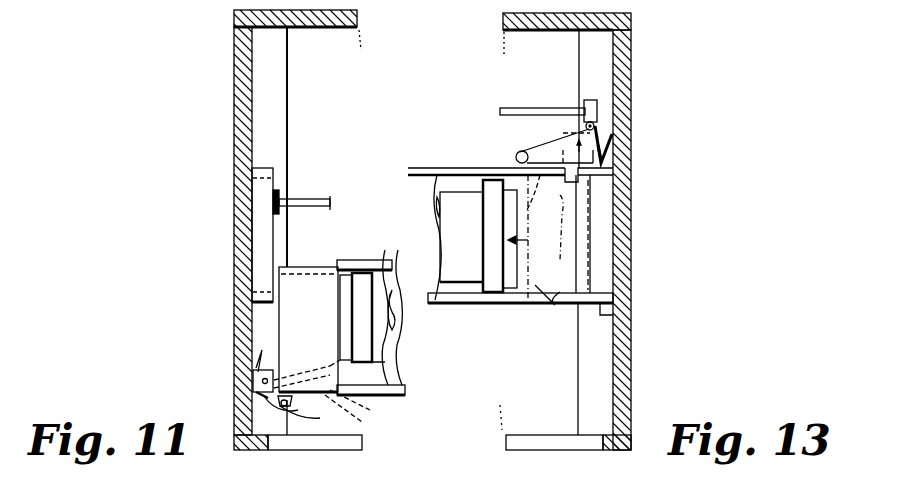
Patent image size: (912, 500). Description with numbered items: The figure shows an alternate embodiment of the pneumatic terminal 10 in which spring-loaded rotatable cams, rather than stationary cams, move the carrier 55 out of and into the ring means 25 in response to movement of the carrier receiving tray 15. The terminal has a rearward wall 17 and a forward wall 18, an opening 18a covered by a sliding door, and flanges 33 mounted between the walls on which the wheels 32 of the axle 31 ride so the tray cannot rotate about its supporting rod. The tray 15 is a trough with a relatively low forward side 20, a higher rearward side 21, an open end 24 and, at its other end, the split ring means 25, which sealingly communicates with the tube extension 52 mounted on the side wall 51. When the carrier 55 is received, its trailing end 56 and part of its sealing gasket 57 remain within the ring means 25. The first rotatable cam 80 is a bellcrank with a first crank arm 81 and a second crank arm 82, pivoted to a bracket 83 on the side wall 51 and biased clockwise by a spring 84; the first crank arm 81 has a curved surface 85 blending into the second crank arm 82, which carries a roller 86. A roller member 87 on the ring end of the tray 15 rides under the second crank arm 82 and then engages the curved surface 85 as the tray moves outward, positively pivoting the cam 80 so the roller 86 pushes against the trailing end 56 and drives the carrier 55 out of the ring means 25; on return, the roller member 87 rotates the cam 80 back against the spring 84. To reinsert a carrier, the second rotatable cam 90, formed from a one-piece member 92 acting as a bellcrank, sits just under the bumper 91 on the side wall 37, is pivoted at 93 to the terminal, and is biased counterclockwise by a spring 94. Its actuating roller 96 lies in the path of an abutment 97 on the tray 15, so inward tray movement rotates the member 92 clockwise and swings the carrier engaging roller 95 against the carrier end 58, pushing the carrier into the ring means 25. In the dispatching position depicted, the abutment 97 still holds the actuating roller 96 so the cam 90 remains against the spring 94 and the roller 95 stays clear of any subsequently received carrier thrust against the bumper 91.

In FIG. 11, the pneumatic terminal 10 is at (226, 150).
In FIG. 13, the pneumatic terminal 10 is at (652, 146).
In FIG. 11, the carrier receiving tray 15 is at (410, 395).
In FIG. 13, the carrier receiving tray 15 is at (478, 308).
In FIG. 11, the rearward wall 17 is at (246, 19).
In FIG. 13, the rearward wall 17 is at (628, 22).
In FIG. 11, the forward wall 18 is at (243, 445).
In FIG. 13, the forward wall 18 is at (620, 452).
In FIG. 11, the opening 18a is at (336, 450).
In FIG. 13, the opening 18a is at (548, 445).
In FIG. 11, the forward side 20 is at (405, 390).
In FIG. 13, the forward side 20 is at (436, 305).
In FIG. 11, the rearward side 21 is at (380, 262).
In FIG. 13, the rearward side 21 is at (428, 165).
In FIG. 13, the open end 24 is at (605, 262).
In FIG. 11, the ring means 25 is at (312, 265).
In FIG. 11, the axle 31 is at (307, 198).
In FIG. 13, the axle 31 is at (500, 112).
In FIG. 11, the wheels 32 is at (280, 200).
In FIG. 13, the wheels 32 is at (589, 100).
In FIG. 11, the flanges 33 is at (286, 150).
In FIG. 13, the flanges 33 is at (600, 66).
In FIG. 11, the side wall 37 is at (243, 231).
In FIG. 13, the side wall 37 is at (625, 358).
In FIG. 11, the side wall 51 is at (236, 175).
In FIG. 11, the tube extension 52 is at (258, 230).
In FIG. 11, the carrier 55 is at (455, 228).
In FIG. 13, the carrier 55 is at (462, 228).
In FIG. 11, the trailing end 56 is at (340, 290).
In FIG. 13, the trailing end 56 is at (493, 236).
In FIG. 11, the sealing gasket 57 is at (358, 319).
In FIG. 13, the sealing gasket 57 is at (515, 237).
In FIG. 13, the carrier end 58 is at (528, 296).
In FIG. 11, the first rotatable cam 80 is at (365, 425).
In FIG. 11, the first crank arm 81 is at (262, 398).
In FIG. 11, the second crank arm 82 is at (322, 360).
In FIG. 11, the bracket 83 is at (252, 375).
In FIG. 11, the spring 84 is at (258, 392).
In FIG. 11, the curved surface 85 is at (300, 422).
In FIG. 11, the roller 86 is at (398, 368).
In FIG. 11, the roller member 87 is at (297, 405).
In FIG. 13, the second rotatable cam 90 is at (597, 135).
In FIG. 13, the bumper 91 is at (605, 312).
In FIG. 13, the one-piece member 92 is at (548, 148).
In FIG. 13, the pivot 93 is at (610, 165).
In FIG. 13, the spring 94 is at (612, 148).
In FIG. 13, the carrier engaging roller 95 is at (512, 158).
In FIG. 13, the actuating roller 96 is at (600, 122).
In FIG. 13, the abutment 97 is at (545, 146).